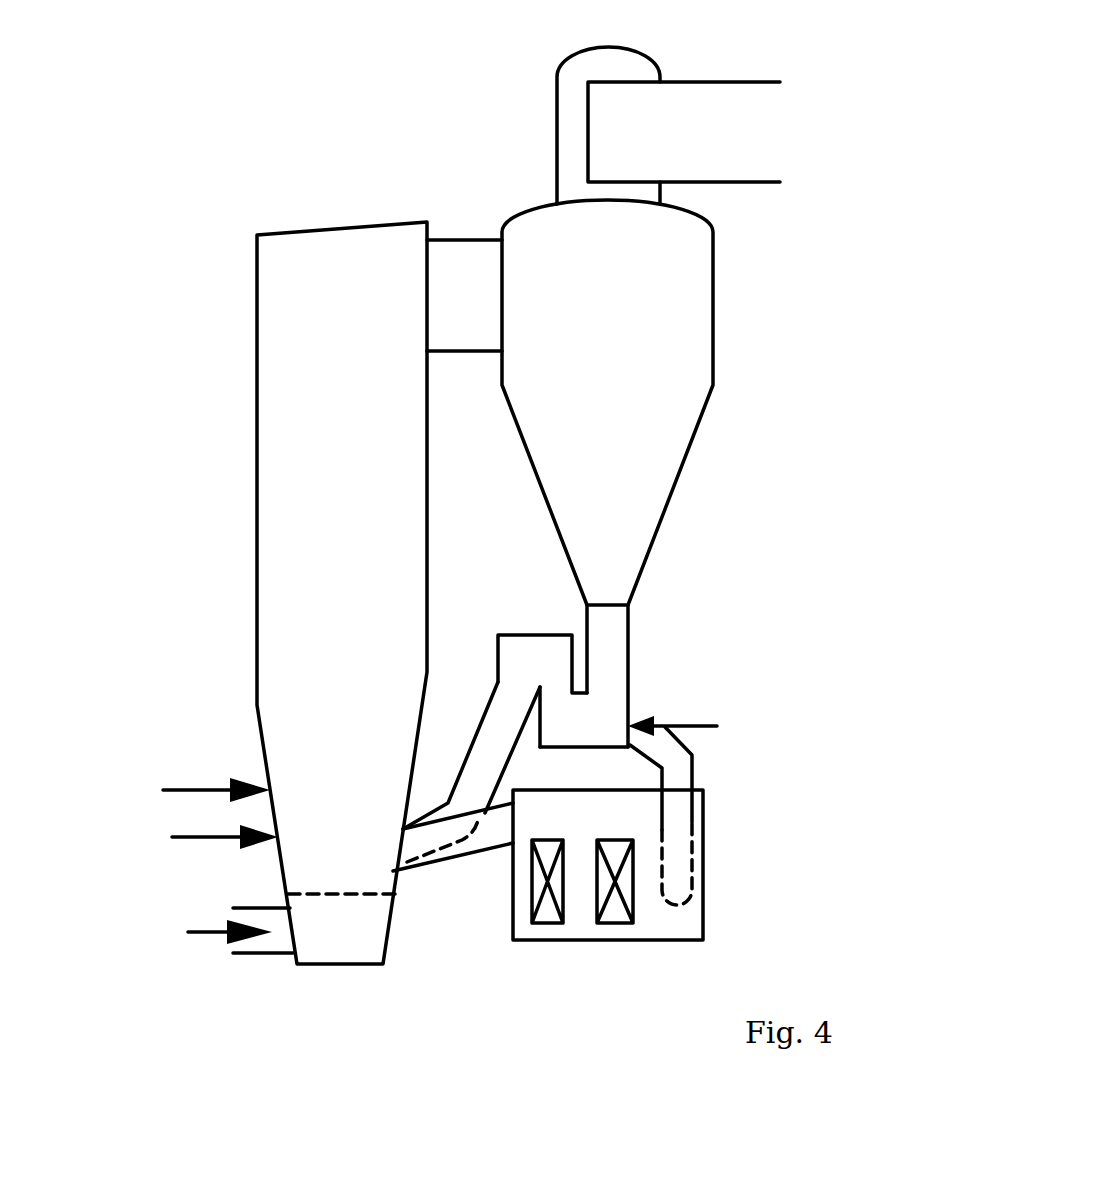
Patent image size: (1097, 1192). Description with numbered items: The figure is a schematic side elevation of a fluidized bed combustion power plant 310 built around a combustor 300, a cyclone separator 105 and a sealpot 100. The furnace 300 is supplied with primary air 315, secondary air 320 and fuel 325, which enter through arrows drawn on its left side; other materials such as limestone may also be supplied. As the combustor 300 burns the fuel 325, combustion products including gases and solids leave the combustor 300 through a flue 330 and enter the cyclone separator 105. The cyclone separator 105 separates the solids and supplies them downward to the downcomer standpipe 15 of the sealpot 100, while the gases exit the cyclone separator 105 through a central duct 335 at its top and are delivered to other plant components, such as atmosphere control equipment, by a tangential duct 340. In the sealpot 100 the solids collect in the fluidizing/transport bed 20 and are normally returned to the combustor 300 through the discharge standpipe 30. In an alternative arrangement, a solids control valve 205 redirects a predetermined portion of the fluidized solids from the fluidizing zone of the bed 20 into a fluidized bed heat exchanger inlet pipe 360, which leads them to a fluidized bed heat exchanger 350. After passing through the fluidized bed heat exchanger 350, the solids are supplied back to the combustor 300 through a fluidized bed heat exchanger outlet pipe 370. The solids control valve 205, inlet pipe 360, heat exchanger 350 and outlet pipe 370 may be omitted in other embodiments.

The fluidized bed combustion power plant 310 is at (213, 80).
The combustor 300 is at (258, 393).
The flue 330 is at (460, 241).
The central duct 335 is at (558, 90).
The tangential duct 340 is at (711, 96).
The cyclone separator 105 is at (665, 458).
The downcomer standpipe 15 is at (608, 629).
The sealpot 100 is at (672, 643).
The fluidizing/transport bed 20 is at (580, 728).
The discharge standpipe 30 is at (484, 722).
The solids control valve 205 is at (656, 728).
The fluidized bed heat exchanger inlet pipe 360 is at (684, 770).
The fluidized bed heat exchanger 350 is at (686, 921).
The fluidized bed heat exchanger outlet pipe 370 is at (458, 850).
The secondary air 320 is at (182, 790).
The fuel 325 is at (190, 837).
The primary air 315 is at (204, 935).